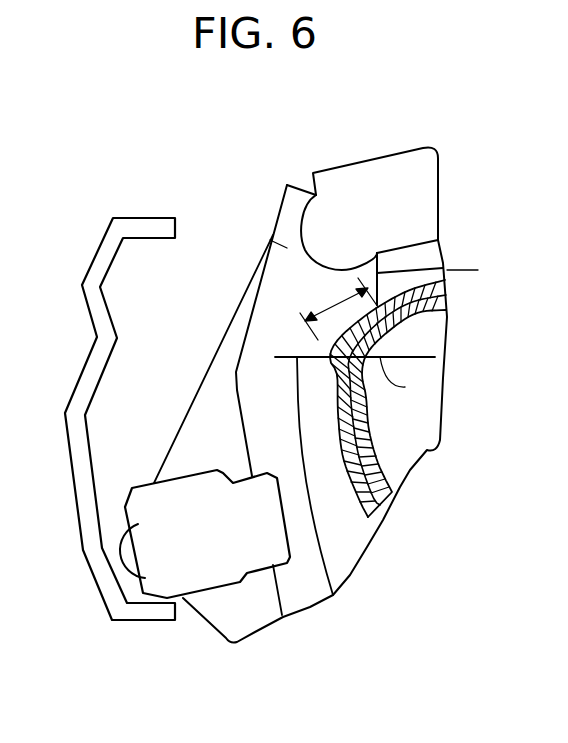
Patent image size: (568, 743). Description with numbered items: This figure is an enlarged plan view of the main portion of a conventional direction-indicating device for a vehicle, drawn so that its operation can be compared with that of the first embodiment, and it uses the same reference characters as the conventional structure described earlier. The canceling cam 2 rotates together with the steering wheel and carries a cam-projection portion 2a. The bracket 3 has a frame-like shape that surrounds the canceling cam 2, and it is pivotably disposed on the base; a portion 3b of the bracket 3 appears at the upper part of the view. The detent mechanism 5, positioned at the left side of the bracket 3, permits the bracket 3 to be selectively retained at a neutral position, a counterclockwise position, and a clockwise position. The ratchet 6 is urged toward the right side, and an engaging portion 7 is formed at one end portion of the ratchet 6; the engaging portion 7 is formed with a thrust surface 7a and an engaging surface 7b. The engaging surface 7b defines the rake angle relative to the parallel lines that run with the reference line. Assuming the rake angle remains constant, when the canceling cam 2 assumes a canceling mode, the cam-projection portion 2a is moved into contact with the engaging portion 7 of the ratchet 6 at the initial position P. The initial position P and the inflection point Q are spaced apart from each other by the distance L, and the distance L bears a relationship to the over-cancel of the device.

The canceling cam 2 is at (367, 550).
The cam-projection portion 2a is at (318, 344).
The bracket 3 is at (372, 191).
The lobe of support member 3b is at (335, 228).
The detent mechanism 5 is at (88, 601).
The ratchet 6 is at (255, 428).
The engaging portion 7 is at (344, 354).
The thrust surface 7a is at (444, 260).
The engaging surface 7b is at (448, 305).
The inflection point Q is at (474, 268).
The initial position P is at (328, 340).
The distance L is at (339, 309).